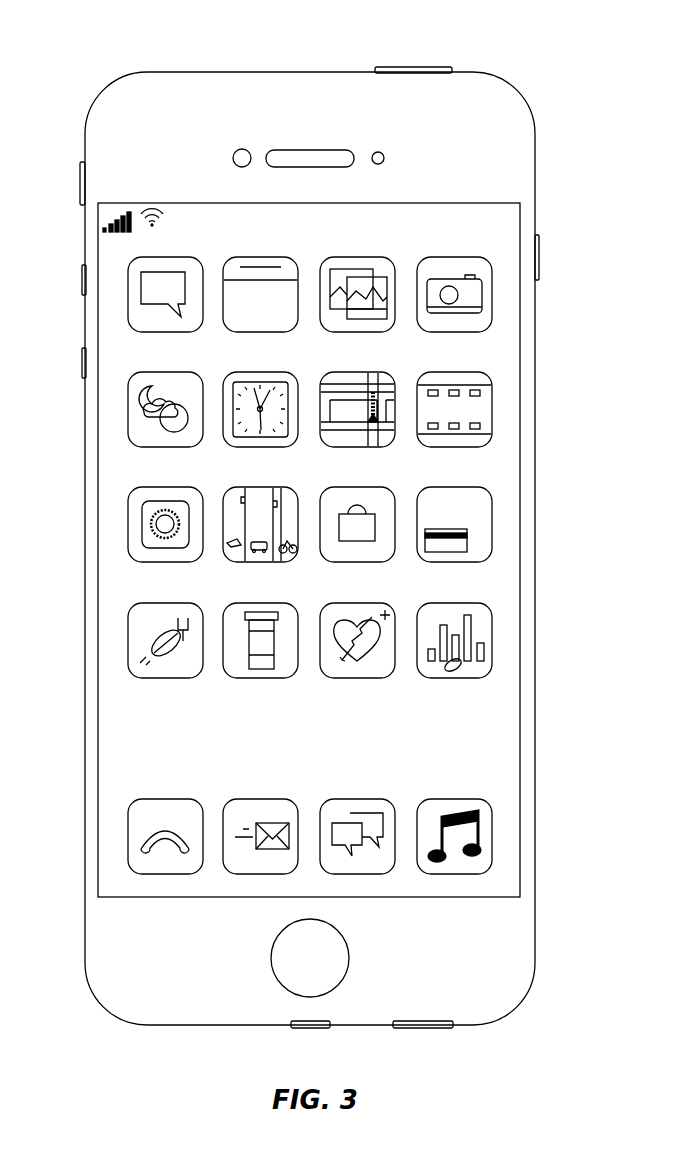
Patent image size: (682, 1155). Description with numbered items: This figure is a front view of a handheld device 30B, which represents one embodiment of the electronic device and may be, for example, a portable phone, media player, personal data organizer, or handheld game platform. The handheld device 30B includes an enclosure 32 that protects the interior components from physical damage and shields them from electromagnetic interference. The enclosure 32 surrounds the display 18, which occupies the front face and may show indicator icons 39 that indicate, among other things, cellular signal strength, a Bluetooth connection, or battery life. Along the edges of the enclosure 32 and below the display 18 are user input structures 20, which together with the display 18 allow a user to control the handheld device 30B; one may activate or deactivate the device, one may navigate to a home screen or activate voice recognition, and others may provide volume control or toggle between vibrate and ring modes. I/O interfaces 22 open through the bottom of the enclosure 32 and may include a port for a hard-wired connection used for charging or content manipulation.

The handheld device 30B is at (89, 70).
The enclosure 32 is at (537, 158).
The display 18 is at (521, 597).
The user input structures 20 is at (409, 67).
The I/O interfaces 22 is at (313, 1029).
The indicator icons 39 is at (151, 207).